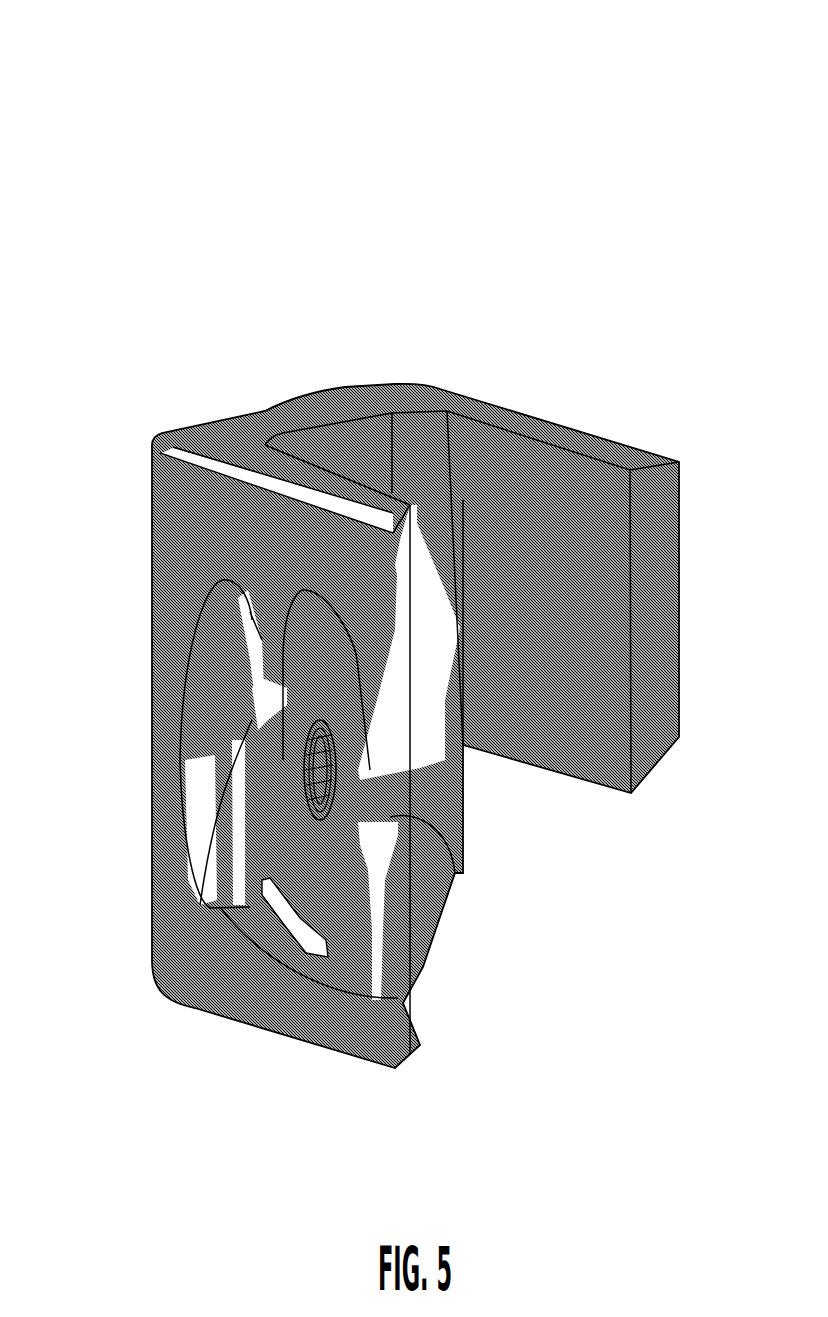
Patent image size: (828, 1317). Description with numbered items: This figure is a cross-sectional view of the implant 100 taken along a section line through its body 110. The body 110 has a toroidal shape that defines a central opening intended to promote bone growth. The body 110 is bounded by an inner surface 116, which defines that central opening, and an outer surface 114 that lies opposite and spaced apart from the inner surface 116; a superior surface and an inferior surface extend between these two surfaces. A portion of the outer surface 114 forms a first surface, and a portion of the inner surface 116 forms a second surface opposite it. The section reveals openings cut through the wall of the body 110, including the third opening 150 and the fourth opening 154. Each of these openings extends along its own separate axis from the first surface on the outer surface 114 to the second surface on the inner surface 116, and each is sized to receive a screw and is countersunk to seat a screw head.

The implant 100 is at (370, 570).
The body 110 is at (180, 563).
The outer surface 114 is at (282, 537).
The inner surface 116 is at (499, 517).
The third opening 150 is at (258, 650).
The fourth opening 154 is at (260, 812).